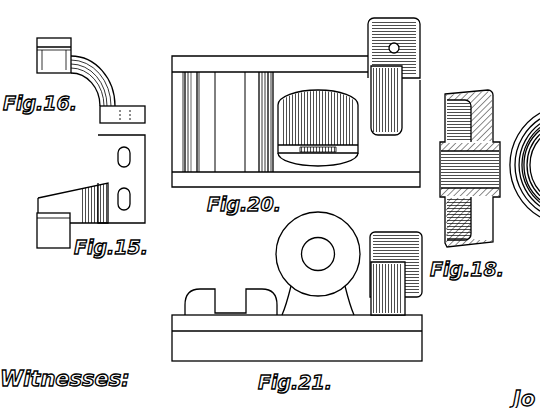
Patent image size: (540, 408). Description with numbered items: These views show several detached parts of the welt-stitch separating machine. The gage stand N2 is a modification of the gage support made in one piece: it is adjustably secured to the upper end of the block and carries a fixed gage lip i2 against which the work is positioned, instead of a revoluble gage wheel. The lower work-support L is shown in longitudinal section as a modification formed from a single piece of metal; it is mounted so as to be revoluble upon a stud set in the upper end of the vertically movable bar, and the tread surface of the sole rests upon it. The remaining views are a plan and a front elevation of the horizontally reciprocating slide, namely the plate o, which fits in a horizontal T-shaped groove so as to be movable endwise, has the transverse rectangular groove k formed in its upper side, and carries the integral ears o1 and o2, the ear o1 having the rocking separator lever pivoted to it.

In FIG. 16, the fixed gage lip i2 is at (54, 45).
In FIG. 15, the fixed gage lip i2 is at (53, 230).
In FIG. 16, the gage stand N2 is at (96, 67).
In FIG. 15, the gage stand N2 is at (53, 211).
In FIG. 20, the rectangular groove k is at (228, 122).
In FIG. 21, the rectangular groove k is at (231, 302).
In FIG. 20, the ear o1 is at (318, 128).
In FIG. 21, the ear o1 is at (318, 263).
In FIG. 20, the plate o is at (296, 121).
In FIG. 21, the plate o is at (297, 338).
In FIG. 20, the ear o2 is at (408, 76).
In FIG. 21, the ear o2 is at (396, 273).
In FIG. 18, the lower work-support L is at (473, 168).